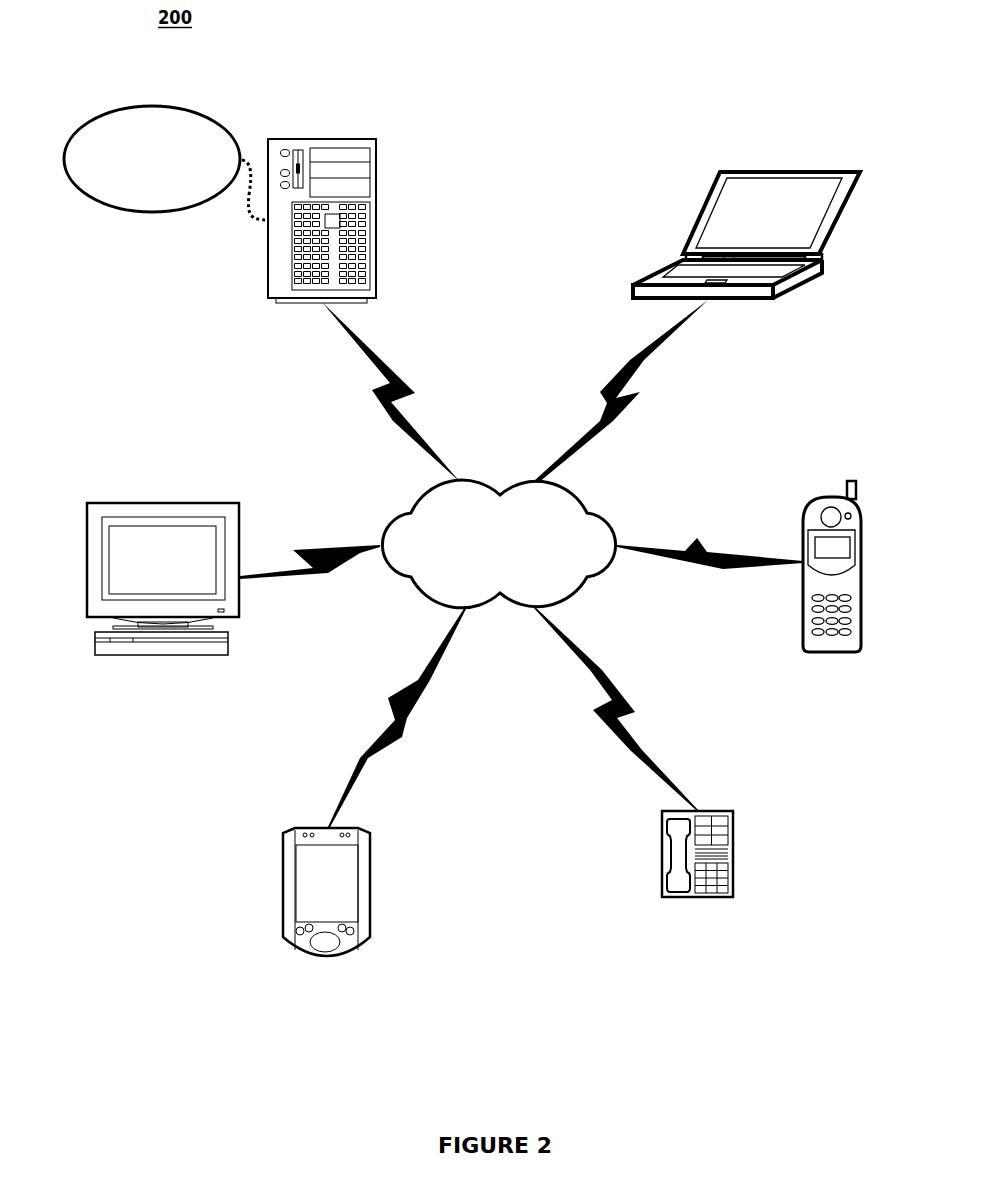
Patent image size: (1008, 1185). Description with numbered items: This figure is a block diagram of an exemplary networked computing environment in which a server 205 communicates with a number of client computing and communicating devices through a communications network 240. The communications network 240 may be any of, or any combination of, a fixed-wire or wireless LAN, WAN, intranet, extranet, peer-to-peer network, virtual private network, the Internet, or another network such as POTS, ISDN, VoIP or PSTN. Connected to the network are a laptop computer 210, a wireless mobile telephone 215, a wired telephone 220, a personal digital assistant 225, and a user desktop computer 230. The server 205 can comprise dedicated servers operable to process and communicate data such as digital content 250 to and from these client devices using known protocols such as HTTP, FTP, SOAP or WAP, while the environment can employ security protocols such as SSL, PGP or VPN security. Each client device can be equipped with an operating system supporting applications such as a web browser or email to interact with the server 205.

The server 205 is at (336, 199).
The laptop computer 210 is at (746, 212).
The wireless mobile telephone 215 is at (803, 554).
The wired telephone 220 is at (737, 832).
The personal digital assistant 225 is at (379, 892).
The user desktop computer 230 is at (167, 615).
The communications network 240 is at (460, 544).
The digital content 250 is at (166, 163).